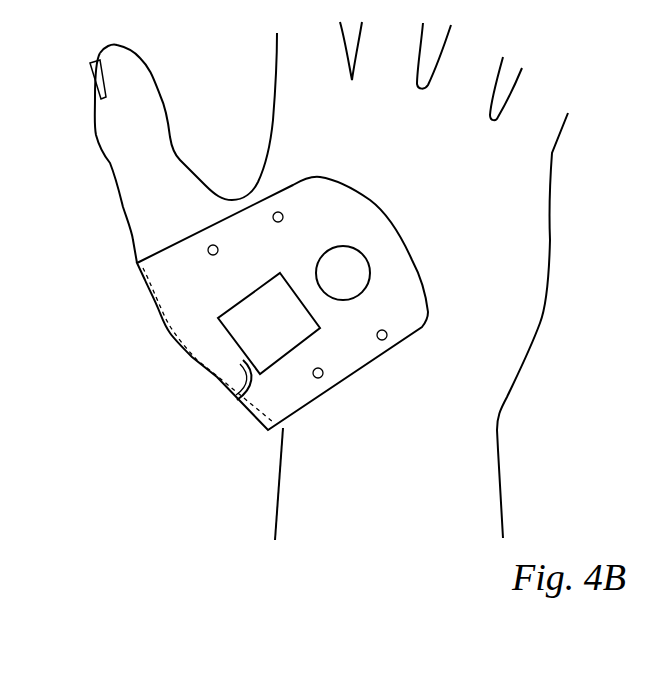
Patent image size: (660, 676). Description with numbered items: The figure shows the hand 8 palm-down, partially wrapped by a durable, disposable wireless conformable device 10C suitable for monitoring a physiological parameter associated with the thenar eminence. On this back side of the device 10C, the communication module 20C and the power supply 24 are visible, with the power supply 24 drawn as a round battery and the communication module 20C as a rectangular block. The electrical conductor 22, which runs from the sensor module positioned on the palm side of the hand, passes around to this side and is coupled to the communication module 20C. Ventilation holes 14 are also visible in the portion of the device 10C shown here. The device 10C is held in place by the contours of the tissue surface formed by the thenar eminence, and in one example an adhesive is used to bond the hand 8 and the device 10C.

The hand 8 is at (275, 126).
The conformable device 10C is at (355, 188).
The ventilation holes 14 is at (272, 215).
The communication module 20C is at (318, 337).
The electrical conductor 22 is at (243, 370).
The power supply 24 is at (355, 293).